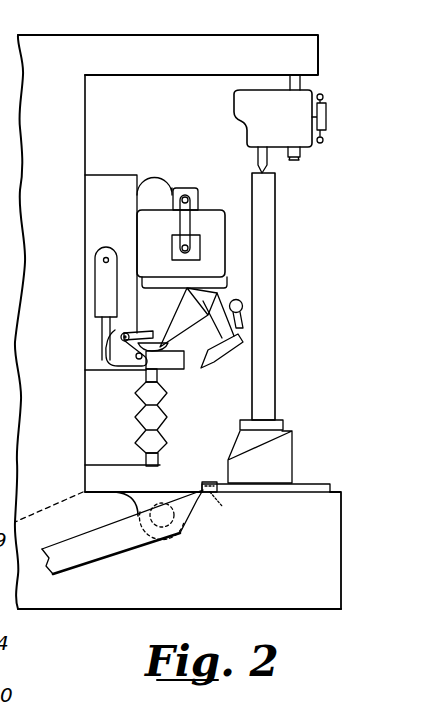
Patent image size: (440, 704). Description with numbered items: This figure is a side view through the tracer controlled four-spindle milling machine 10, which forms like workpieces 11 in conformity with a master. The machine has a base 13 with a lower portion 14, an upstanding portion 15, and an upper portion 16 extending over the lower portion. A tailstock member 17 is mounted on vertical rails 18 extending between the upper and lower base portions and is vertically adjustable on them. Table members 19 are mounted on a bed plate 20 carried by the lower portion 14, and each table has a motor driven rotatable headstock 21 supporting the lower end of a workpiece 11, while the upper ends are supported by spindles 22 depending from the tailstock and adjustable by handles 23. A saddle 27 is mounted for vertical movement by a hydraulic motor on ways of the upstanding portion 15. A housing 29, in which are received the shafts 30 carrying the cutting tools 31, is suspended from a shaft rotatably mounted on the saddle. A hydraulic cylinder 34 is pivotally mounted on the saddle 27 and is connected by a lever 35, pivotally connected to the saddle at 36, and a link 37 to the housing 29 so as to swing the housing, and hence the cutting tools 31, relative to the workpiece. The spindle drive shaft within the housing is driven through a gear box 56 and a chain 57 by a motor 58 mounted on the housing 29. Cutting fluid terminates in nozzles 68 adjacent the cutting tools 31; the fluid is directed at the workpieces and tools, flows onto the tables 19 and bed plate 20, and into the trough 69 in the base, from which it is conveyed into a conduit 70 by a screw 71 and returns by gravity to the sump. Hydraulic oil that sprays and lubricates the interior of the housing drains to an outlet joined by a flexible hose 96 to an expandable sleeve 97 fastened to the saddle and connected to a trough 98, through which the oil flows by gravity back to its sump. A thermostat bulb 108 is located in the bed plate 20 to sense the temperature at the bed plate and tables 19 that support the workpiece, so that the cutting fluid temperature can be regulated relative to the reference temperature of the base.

The milling machine 10 is at (252, 608).
The workpieces 11 is at (275, 207).
The base 13 is at (70, 611).
The lower portion 14 is at (284, 568).
The upstanding portion 15 is at (63, 358).
The upper portion 16 is at (205, 61).
The tailstock member 17 is at (250, 108).
The vertical rails 18 is at (300, 83).
The table members 19 is at (293, 453).
The bed plate 20 is at (330, 488).
The headstock 21 is at (283, 423).
The spindles 22 is at (258, 157).
The handles 23 is at (335, 107).
The saddle 27 is at (102, 175).
The housing 29 is at (212, 210).
The shafts 30 is at (208, 320).
The cutting tools 31 is at (212, 358).
The hydraulic cylinder 34 is at (100, 288).
The lever 35 is at (107, 376).
The pivot connection 36 is at (113, 362).
The link 37 is at (138, 334).
The gear box 56 is at (177, 248).
The chain 57 is at (180, 223).
The motor 58 is at (177, 185).
The nozzles 68 is at (244, 316).
The trough 69 is at (126, 505).
The conduit 70 is at (98, 563).
The screw 71 is at (155, 503).
The flexible hose 96 is at (167, 346).
The expandable sleeve 97 is at (167, 412).
The trough 98 is at (132, 490).
The bulb 108 is at (233, 503).